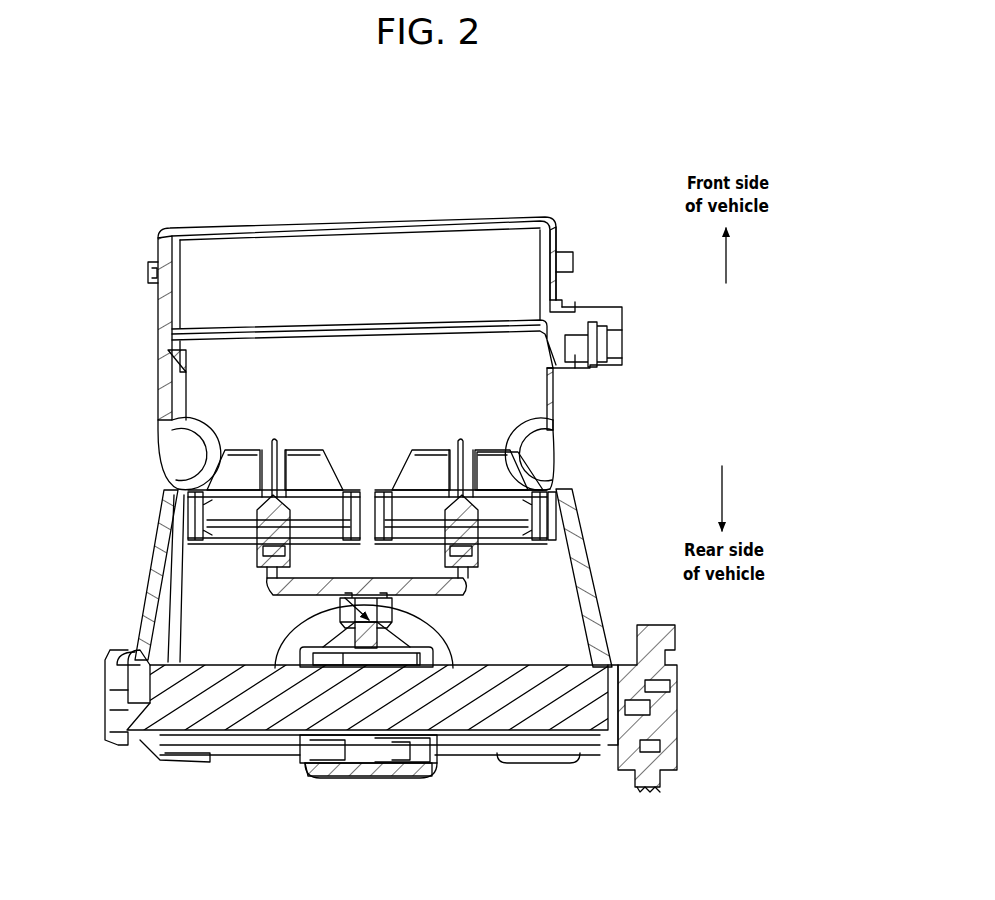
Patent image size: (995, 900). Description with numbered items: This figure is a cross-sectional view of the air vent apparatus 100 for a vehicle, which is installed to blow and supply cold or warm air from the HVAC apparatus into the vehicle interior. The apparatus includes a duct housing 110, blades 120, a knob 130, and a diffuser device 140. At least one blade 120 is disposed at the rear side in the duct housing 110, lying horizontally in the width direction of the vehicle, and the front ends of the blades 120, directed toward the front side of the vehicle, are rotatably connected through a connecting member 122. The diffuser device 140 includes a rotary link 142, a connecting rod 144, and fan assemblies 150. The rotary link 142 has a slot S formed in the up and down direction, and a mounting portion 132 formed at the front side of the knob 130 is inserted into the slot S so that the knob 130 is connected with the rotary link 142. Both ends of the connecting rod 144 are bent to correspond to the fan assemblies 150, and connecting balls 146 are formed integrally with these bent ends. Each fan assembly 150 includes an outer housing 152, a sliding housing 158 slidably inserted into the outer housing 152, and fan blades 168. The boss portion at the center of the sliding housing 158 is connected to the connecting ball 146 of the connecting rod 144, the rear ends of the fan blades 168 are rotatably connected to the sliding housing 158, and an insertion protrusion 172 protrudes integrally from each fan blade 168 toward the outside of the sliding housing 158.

The air vent apparatus 100 is at (364, 142).
The duct housing 110 is at (564, 395).
The blade 120 is at (204, 704).
The connecting member 122 is at (600, 740).
The knob 130 is at (402, 772).
The mounting portion 132 is at (453, 668).
The diffuser device 140 is at (230, 580).
The rotary link 142 is at (367, 636).
The connecting rod 144 is at (477, 578).
The connecting ball 146 is at (478, 553).
The fan assembly 150 is at (554, 522).
The outer housing 152 is at (550, 512).
The sliding housing 158 is at (195, 522).
The fan blade 168 is at (498, 468).
The insertion protrusion 172 is at (566, 484).
The slot S is at (275, 668).